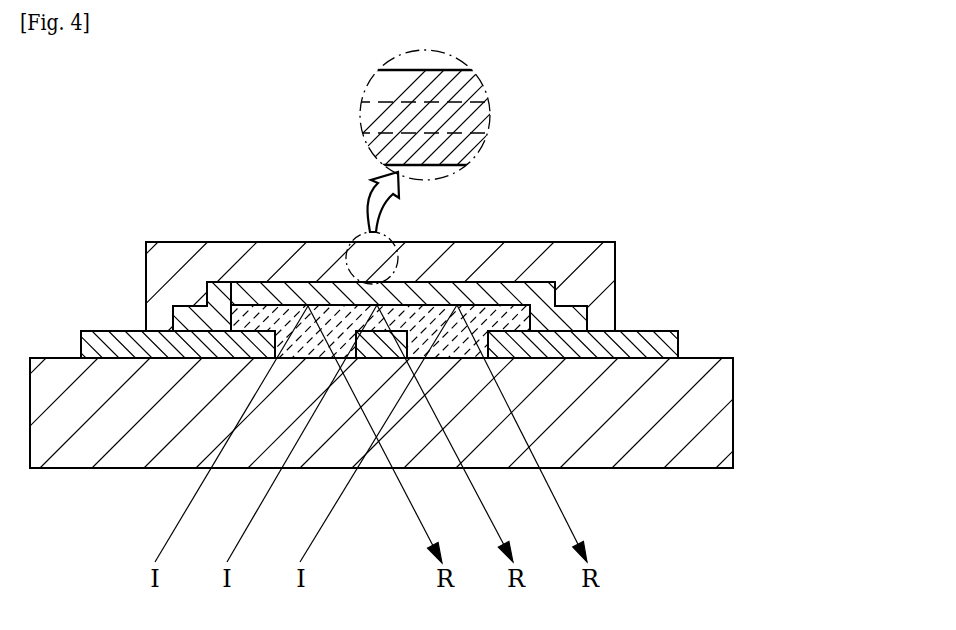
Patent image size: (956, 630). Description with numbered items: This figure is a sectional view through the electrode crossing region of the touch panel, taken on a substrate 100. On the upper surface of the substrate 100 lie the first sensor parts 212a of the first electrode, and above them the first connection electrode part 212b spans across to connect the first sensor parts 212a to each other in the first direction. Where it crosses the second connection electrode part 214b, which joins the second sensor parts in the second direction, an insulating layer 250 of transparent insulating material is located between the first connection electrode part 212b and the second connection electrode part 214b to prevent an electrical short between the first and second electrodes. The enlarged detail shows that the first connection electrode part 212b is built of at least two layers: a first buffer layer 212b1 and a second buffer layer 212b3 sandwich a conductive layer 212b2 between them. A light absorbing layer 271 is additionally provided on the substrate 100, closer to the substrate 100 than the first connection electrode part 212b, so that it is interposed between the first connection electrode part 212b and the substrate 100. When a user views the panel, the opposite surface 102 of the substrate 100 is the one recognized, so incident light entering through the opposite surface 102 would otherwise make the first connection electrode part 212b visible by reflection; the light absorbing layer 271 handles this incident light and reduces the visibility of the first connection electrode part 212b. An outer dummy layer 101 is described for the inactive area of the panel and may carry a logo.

The substrate 100 is at (723, 430).
The outer dummy layer 101 is at (690, 360).
The opposite surface 102 is at (680, 468).
The first sensor part 212a is at (677, 345).
The first connection electrode part 212b is at (603, 268).
The first buffer layer 212b1 is at (472, 150).
The conductive layer 212b2 is at (482, 120).
The second buffer layer 212b3 is at (477, 83).
The second connection electrode part 214b is at (585, 310).
The insulating layer 250 is at (284, 308).
The light absorbing layer 271 is at (223, 290).